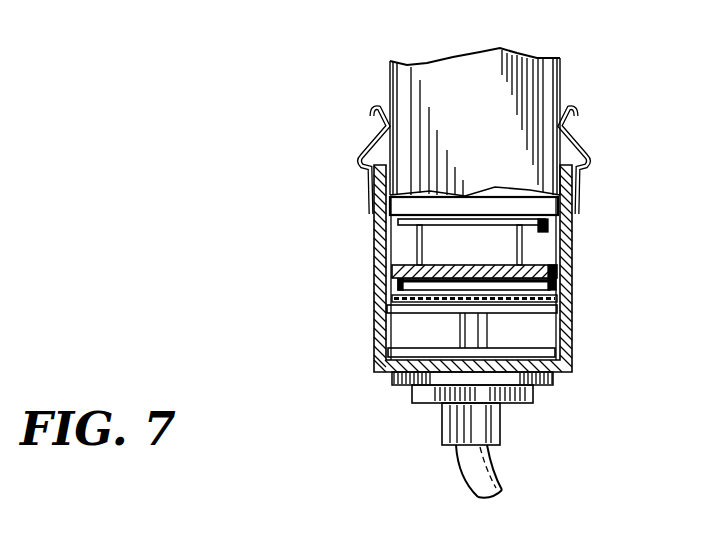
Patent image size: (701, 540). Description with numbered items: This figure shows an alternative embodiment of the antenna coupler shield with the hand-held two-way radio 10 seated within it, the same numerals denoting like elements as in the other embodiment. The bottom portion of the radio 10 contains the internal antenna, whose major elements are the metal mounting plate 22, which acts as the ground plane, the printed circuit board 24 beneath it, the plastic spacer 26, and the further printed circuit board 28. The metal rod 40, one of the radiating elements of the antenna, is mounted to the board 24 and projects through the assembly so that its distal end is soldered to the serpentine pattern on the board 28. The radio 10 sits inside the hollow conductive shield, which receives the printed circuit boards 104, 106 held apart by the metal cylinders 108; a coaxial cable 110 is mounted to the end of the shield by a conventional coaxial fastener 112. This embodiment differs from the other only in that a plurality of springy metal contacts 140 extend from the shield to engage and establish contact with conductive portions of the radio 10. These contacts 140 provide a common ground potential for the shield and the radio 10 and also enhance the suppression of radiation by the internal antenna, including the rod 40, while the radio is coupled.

The hand-held two-way radio 10 is at (560, 63).
The springy metal contacts 140 is at (587, 143).
The metal mounting plate 22 is at (555, 204).
The printed circuit board 24 is at (543, 224).
The metal rod 40 is at (418, 243).
The plastic spacer 26 is at (393, 271).
The printed circuit board 28 is at (392, 294).
The printed circuit board 106 is at (388, 318).
The metal cylinders 108 is at (460, 328).
The printed circuit board 104 is at (547, 353).
The coaxial fastener 112 is at (533, 408).
The coaxial cable 110 is at (496, 467).